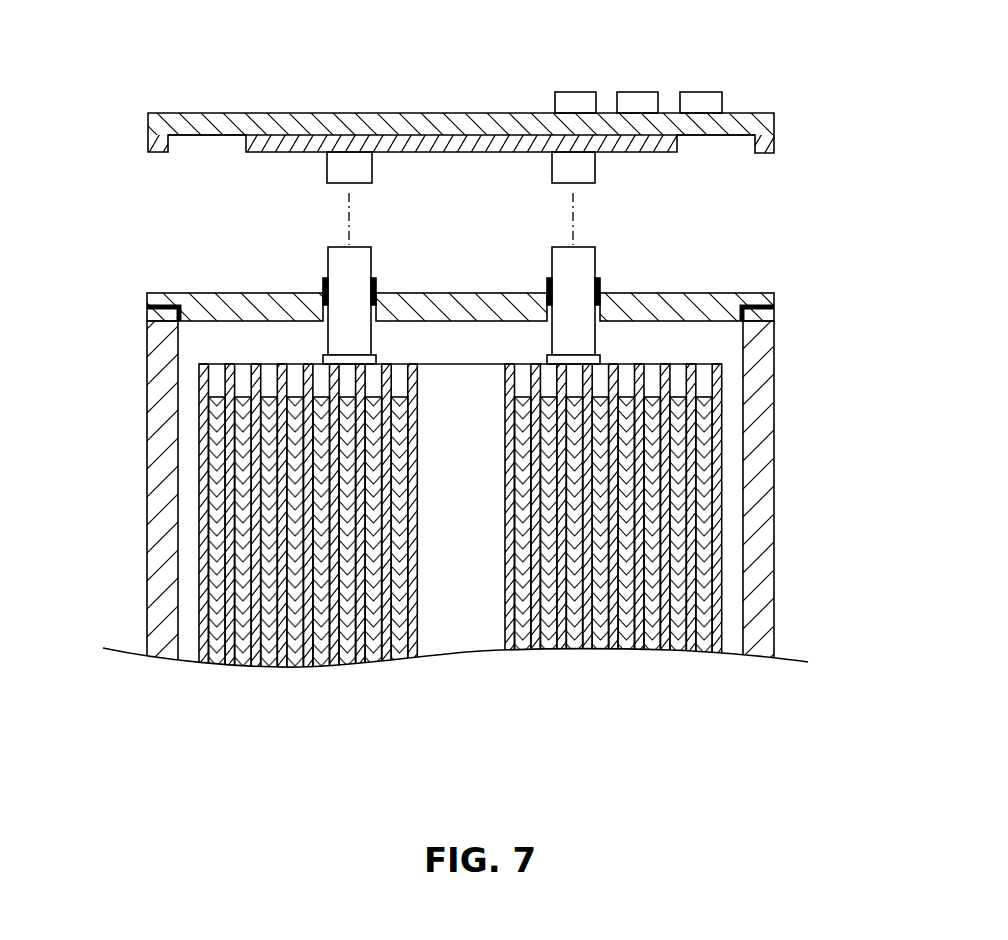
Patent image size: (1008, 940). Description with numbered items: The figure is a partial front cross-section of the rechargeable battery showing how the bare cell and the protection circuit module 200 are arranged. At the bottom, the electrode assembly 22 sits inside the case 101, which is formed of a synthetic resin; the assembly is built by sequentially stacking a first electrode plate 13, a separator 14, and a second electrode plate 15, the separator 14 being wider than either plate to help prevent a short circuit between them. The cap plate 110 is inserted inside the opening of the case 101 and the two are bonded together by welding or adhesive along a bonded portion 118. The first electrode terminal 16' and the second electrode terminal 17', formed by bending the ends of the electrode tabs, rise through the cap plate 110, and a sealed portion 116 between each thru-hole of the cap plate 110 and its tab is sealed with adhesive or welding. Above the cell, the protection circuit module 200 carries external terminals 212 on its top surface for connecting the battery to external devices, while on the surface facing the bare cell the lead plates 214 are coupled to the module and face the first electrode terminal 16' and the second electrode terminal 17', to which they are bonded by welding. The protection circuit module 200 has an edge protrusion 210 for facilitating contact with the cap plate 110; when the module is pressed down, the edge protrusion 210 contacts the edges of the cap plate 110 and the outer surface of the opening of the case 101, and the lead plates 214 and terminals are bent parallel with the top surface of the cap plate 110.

The protection circuit module 200 is at (348, 113).
The edge protrusion 210 is at (762, 150).
The external terminals 212 is at (700, 100).
The lead plates 214 is at (362, 166).
The cap plate 110 is at (220, 293).
The bonded portion 118 is at (158, 300).
The first electrode terminal 16' is at (319, 286).
The second electrode terminal 17' is at (617, 299).
The sealed portion 116 is at (550, 283).
The electrode assembly 22 is at (538, 556).
The case 101 is at (775, 528).
The second electrode plate 15 is at (676, 650).
The first electrode plate 13 is at (700, 650).
The separator 14 is at (713, 650).